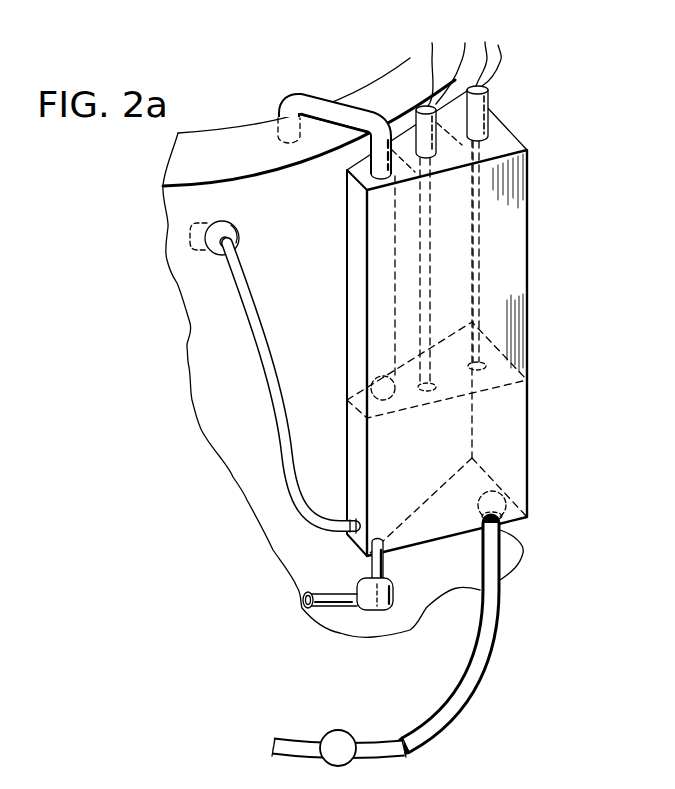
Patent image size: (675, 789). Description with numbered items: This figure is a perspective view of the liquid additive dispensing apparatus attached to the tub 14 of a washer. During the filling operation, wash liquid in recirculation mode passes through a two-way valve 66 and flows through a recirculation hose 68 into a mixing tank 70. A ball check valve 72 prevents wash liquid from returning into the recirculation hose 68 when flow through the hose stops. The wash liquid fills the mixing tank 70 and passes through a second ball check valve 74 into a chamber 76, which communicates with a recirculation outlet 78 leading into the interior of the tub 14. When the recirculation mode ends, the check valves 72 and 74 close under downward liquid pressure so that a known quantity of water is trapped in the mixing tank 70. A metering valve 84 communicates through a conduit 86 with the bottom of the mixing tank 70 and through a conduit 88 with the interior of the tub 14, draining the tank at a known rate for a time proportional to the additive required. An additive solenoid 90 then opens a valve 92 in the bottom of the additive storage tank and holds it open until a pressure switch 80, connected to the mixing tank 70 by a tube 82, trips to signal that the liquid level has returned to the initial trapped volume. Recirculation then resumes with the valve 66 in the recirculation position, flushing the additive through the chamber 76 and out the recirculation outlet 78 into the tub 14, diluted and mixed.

The tub 14 is at (205, 339).
The two-way valve 66 is at (354, 733).
The recirculation hose 68 is at (494, 652).
The mixing tank 70 is at (520, 423).
The ball check valve 72 is at (506, 500).
The second ball check valve 74 is at (366, 379).
The chamber 76 is at (347, 260).
The recirculation outlet 78 is at (318, 95).
The pressure switch 80 is at (237, 225).
The tube 82 is at (282, 462).
The metering valve 84 is at (393, 600).
The conduit 86 is at (385, 565).
The conduit 88 is at (303, 587).
The additive solenoid 90 is at (420, 106).
The valve 92 is at (433, 397).